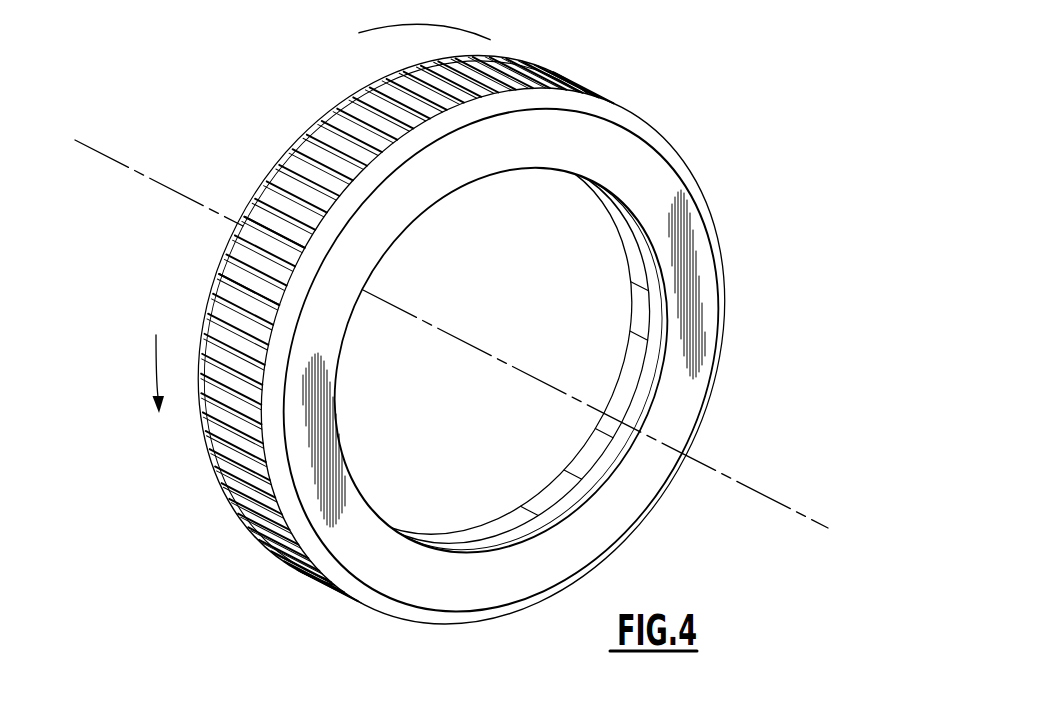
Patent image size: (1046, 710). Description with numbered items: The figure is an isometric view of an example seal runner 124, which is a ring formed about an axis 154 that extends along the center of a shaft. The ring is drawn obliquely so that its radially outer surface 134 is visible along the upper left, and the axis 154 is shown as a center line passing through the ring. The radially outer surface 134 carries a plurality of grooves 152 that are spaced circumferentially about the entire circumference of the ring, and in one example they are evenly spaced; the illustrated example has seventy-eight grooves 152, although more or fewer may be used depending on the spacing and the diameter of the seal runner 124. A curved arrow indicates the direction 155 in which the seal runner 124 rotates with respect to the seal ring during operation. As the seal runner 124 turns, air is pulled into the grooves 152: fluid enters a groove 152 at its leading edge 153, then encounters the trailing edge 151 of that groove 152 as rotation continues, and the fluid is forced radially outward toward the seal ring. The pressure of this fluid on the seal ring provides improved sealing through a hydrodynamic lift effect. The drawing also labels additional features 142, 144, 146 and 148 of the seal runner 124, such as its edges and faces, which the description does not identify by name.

The seal runner 124 is at (462, 352).
The radially outer surface 134 is at (364, 301).
The outer surface 142 is at (430, 336).
The tooth tip surface 144 is at (432, 334).
The front face 146 is at (722, 96).
The rear edge 148 is at (424, 44).
The trailing edge 151 is at (249, 289).
The grooves 152 is at (274, 232).
The leading edge 153 is at (493, 356).
The axis 154 is at (727, 479).
The direction 155 is at (156, 368).